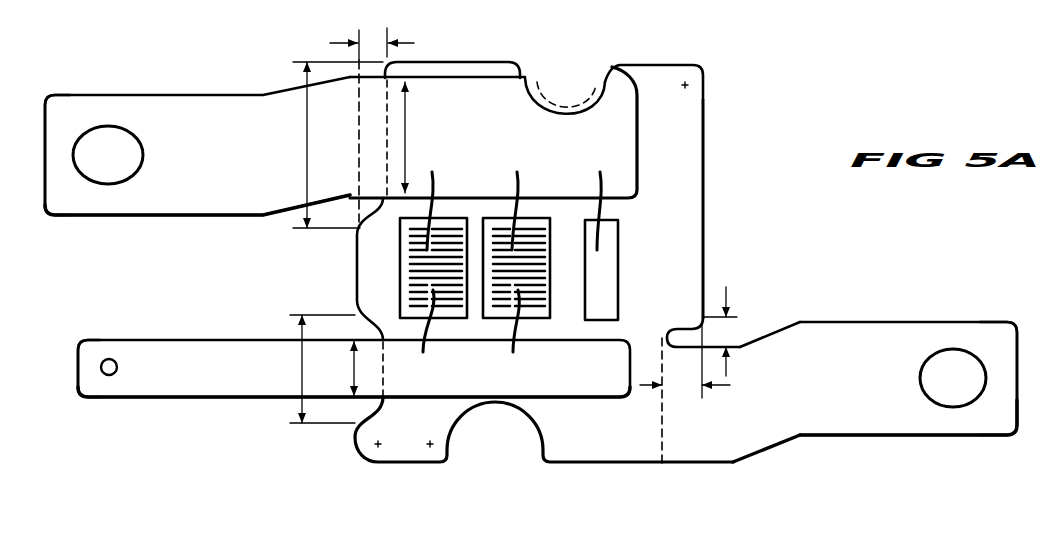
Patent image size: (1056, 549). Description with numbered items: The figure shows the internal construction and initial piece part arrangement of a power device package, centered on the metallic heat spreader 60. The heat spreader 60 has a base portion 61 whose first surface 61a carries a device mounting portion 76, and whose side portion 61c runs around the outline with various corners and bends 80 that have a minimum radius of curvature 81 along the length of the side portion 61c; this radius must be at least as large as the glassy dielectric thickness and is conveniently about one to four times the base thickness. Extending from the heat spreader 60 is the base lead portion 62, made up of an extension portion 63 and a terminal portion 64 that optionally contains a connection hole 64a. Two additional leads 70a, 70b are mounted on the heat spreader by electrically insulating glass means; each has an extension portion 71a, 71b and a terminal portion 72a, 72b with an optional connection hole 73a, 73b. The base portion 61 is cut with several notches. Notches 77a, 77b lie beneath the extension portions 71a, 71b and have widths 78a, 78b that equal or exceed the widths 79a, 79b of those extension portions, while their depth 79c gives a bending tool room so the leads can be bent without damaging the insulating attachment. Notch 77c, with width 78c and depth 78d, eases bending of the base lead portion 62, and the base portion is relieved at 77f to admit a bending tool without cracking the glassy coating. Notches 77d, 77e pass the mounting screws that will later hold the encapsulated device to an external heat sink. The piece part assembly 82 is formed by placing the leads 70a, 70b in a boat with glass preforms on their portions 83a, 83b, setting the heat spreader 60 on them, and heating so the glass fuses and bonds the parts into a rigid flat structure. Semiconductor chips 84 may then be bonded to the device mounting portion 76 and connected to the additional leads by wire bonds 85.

The metallic heat spreader 60 is at (545, 502).
The base portion 61 is at (690, 260).
The first surface 61a is at (693, 171).
The side portion 61c is at (704, 183).
The base lead portion 62 is at (877, 388).
The extension portion 63 is at (790, 323).
The terminal portion 64 is at (977, 321).
The connection hole 64a is at (943, 407).
The additional lead 70a is at (483, 108).
The additional lead 70b is at (495, 376).
The extension portion 71a is at (280, 159).
The extension portion 71b is at (267, 376).
The terminal portion 72a is at (110, 93).
The terminal portion 72b is at (163, 338).
The connection hole 73a is at (128, 126).
The connection hole 73b is at (109, 378).
The device mounting portion 76 is at (473, 220).
The notch 77a is at (387, 155).
The notch 77b is at (383, 363).
The notch 77c is at (680, 312).
The notch 77d is at (560, 118).
The notch 77e is at (495, 404).
The relief 77f is at (662, 428).
The notch width 78a is at (300, 97).
The notch width 78b is at (300, 383).
The notch width 78c is at (728, 332).
The notch depth 78d is at (681, 390).
The extension portion width 79a is at (406, 127).
The extension portion width 79b is at (352, 367).
The notch depth 79c is at (378, 27).
The corners and bends 80 is at (447, 464).
The minimum radius of curvature 81 is at (359, 462).
The piece part assembly 82 is at (886, 212).
The lead portion 83a is at (567, 141).
The lead portion 83b is at (583, 386).
The semiconductor chip 84 is at (399, 278).
The wire bond 85 is at (436, 188).